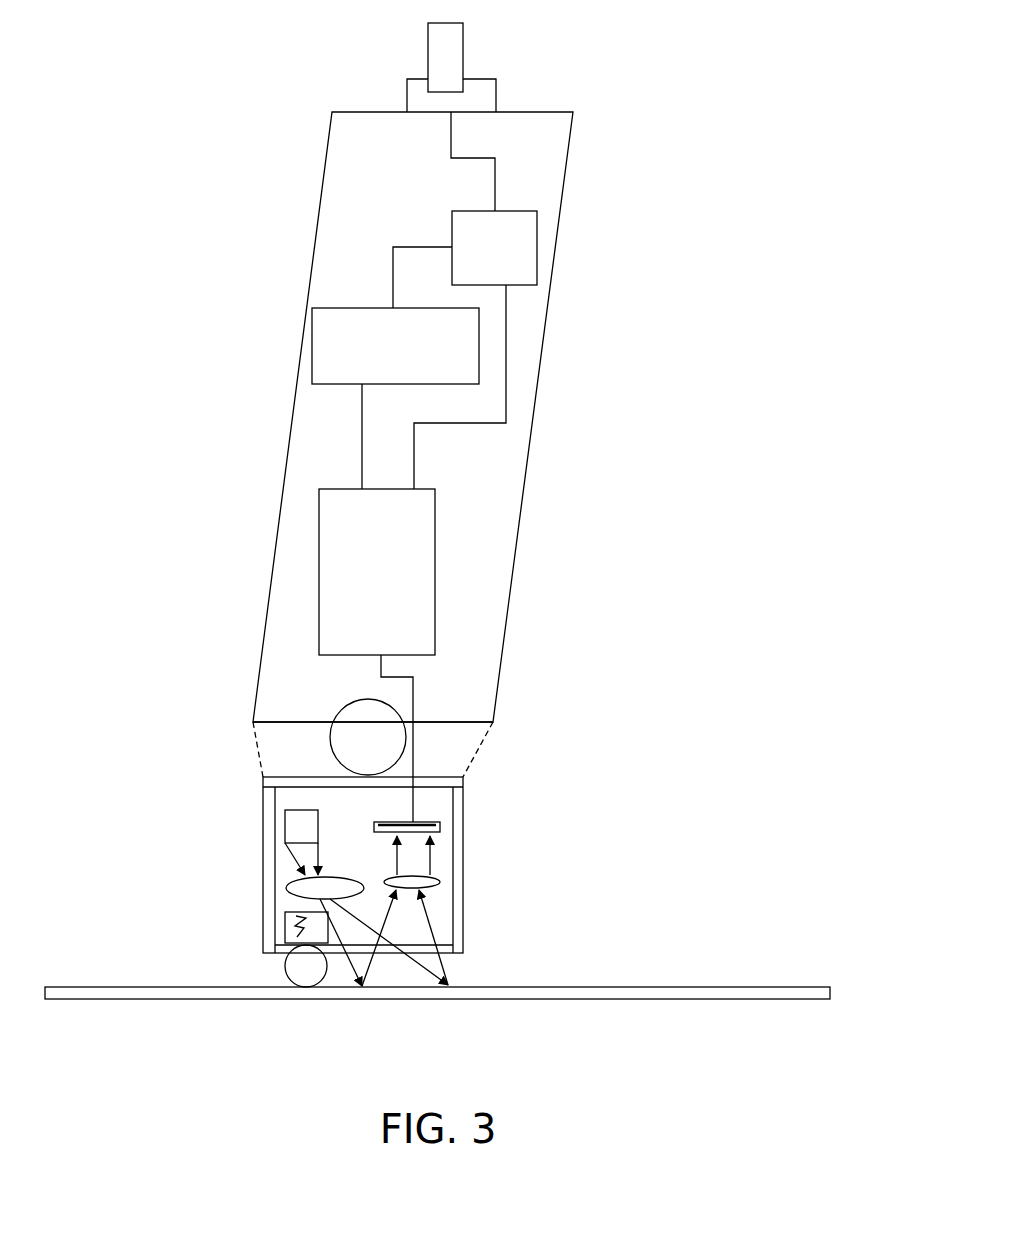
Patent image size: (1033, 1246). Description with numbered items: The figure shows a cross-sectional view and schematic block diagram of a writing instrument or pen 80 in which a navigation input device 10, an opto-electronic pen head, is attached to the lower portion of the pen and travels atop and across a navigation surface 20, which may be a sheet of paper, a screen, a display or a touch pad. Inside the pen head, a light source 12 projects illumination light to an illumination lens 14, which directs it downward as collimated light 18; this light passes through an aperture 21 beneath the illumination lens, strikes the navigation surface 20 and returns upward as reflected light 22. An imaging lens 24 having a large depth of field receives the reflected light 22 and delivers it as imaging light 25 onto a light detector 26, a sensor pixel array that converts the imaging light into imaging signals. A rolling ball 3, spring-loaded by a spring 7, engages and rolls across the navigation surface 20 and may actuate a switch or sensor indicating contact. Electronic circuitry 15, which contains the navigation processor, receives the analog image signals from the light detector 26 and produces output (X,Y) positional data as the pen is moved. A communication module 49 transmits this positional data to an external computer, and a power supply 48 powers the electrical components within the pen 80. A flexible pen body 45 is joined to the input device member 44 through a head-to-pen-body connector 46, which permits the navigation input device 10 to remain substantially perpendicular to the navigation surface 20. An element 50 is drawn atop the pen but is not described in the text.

The rolling ball 3 is at (308, 972).
The spring 7 is at (285, 926).
The navigation input device 10 is at (230, 833).
The light source 12 is at (318, 823).
The illumination lens 14 is at (286, 881).
The electronic circuitry 15 is at (319, 536).
The collimated light 18 is at (347, 963).
The navigation surface 20 is at (652, 986).
The aperture 21 is at (417, 942).
The reflected light 22 is at (392, 921).
The imaging lens 24 is at (415, 872).
The imaging light 25 is at (410, 866).
The light detector 26 is at (440, 826).
The input device member 44 is at (475, 760).
The flexible pen body 45 is at (507, 613).
The head-to-pen-body connector 46 is at (352, 702).
The power supply 48 is at (537, 247).
The communication module 49 is at (312, 362).
The antenna 50 is at (428, 72).
The writing instrument 80 is at (596, 192).